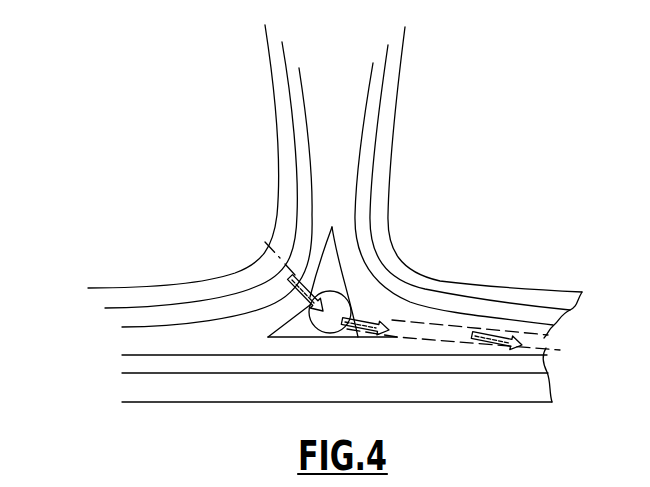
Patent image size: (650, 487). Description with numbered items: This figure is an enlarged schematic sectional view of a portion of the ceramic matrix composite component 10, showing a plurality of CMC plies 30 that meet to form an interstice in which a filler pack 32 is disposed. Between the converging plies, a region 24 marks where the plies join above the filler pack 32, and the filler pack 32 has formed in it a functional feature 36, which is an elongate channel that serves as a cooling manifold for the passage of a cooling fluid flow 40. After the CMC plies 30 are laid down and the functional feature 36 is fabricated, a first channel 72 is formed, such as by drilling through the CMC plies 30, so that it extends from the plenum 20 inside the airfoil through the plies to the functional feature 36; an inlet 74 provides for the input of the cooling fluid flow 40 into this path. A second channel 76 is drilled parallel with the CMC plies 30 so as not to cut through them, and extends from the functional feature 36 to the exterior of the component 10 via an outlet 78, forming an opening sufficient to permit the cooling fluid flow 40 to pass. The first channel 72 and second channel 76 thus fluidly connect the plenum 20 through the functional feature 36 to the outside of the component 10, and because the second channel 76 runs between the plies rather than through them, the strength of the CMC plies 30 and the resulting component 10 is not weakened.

The component 10 is at (89, 92).
The plenum 20 is at (101, 181).
The rib 24 is at (350, 244).
The CMC plies 30 is at (385, 80).
The filler pack 32 is at (287, 322).
The functional feature 36 is at (346, 300).
The cooling fluid flow 40 is at (493, 333).
The first channel 72 is at (262, 265).
The inlet 74 is at (251, 236).
The second channel 76 is at (433, 337).
The outlet 78 is at (566, 347).